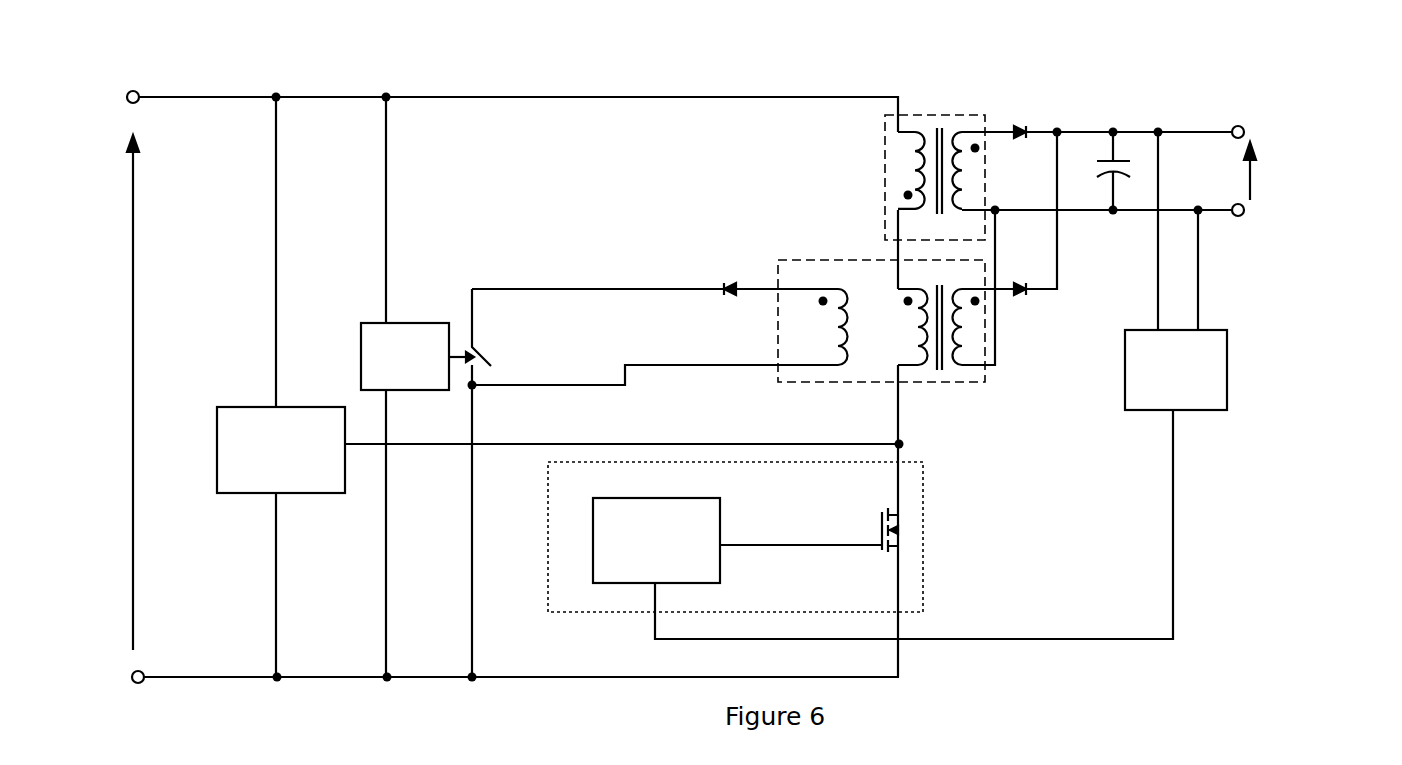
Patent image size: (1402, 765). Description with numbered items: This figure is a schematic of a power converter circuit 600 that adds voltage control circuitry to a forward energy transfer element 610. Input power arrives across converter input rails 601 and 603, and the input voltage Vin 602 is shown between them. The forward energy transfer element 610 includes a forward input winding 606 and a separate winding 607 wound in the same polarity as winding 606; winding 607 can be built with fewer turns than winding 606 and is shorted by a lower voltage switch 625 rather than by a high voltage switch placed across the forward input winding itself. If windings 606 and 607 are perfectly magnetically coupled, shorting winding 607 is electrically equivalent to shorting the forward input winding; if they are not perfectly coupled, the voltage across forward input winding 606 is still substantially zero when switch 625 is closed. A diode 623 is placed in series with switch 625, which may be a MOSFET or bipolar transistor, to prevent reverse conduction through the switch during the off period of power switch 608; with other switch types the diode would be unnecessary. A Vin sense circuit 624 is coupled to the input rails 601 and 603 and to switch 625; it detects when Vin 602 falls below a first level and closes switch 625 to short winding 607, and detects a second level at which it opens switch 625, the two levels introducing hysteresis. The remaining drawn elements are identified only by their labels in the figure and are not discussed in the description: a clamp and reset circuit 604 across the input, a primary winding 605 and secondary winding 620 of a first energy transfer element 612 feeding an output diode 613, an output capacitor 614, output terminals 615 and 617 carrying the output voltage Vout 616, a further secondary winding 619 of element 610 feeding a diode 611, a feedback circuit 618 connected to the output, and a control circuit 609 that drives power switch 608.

The power converter circuit 600 is at (247, 56).
The converter input rail 601 is at (148, 112).
The input voltage 602 is at (98, 375).
The converter input rail 603 is at (128, 682).
The clamp / reset circuit 604 is at (238, 367).
The primary winding 605 is at (912, 163).
The forward input winding 606 is at (908, 325).
The winding 607 is at (833, 337).
The power switch 608 is at (903, 548).
The control circuit block 609 is at (928, 468).
The forward energy transfer element 610 is at (982, 384).
The diode 611 is at (1020, 298).
The first transformer 612 is at (960, 112).
The output diode 613 is at (1027, 123).
The output capacitor 614 is at (1123, 150).
The output terminal 615 is at (1250, 122).
The output voltage Vout 616 is at (1323, 166).
The output terminal 617 is at (1250, 218).
The feedback circuit 618 is at (1200, 418).
The secondary winding 619 is at (962, 340).
The secondary winding 620 is at (965, 177).
The diode 623 is at (727, 280).
The Vin sense circuit 624 is at (380, 321).
The switch 625 is at (495, 350).